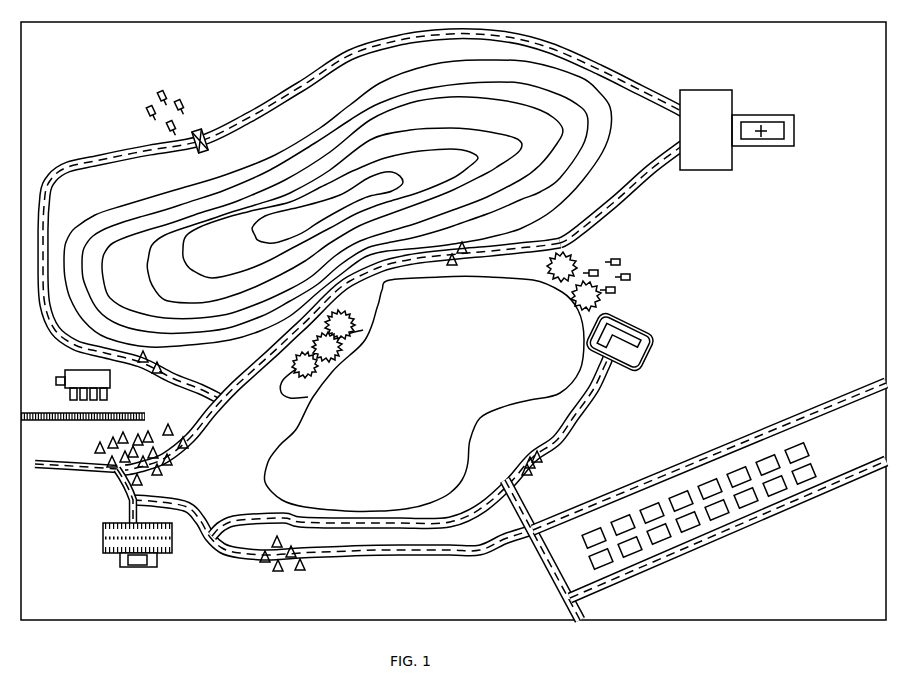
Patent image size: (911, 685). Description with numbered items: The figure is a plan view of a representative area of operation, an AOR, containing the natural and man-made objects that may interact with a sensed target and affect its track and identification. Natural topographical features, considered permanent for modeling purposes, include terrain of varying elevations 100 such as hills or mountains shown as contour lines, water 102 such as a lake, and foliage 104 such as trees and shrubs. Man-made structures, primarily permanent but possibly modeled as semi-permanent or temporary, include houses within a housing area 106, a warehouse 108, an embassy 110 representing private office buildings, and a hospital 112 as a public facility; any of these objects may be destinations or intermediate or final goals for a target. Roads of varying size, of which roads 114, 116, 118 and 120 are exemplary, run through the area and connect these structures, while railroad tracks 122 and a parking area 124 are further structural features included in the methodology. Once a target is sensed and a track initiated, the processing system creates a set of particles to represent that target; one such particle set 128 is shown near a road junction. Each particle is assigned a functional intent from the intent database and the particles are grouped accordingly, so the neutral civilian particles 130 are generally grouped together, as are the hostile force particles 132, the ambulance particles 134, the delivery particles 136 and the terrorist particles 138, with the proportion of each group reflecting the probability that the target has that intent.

The terrain of varying elevations 100 is at (472, 126).
The water 102 is at (466, 356).
The foliage 104 is at (310, 398).
The housing area 106 is at (690, 490).
The warehouse 108 is at (135, 560).
The embassy 110 is at (650, 338).
The hospital 112 is at (738, 140).
The road 114 is at (613, 203).
The road 116 is at (383, 550).
The road 118 is at (667, 553).
The road 120 is at (292, 89).
The railroad tracks 122 is at (145, 416).
The parking area 124 is at (113, 540).
The particle set 128 is at (108, 478).
The neutral civilian particles 130 is at (97, 450).
The hostile force particles 132 is at (190, 434).
The ambulance particles 134 is at (178, 455).
The delivery particles 136 is at (158, 477).
The terrorist particles 138 is at (123, 497).